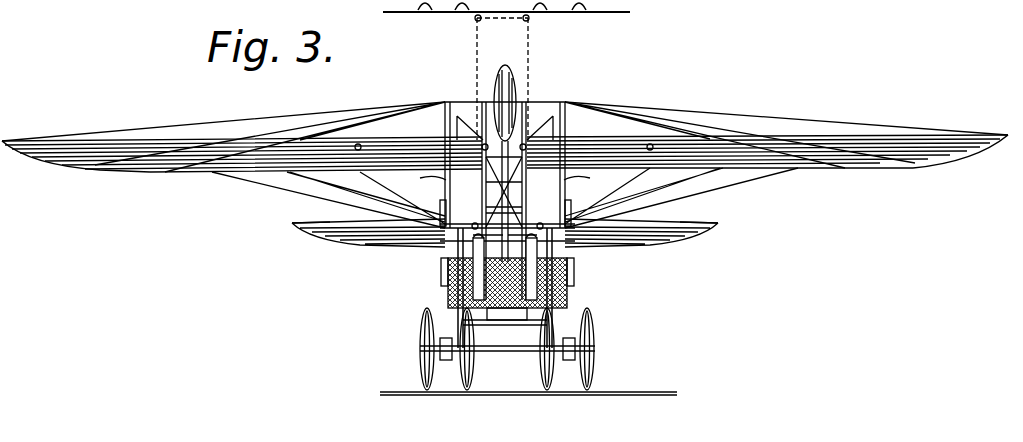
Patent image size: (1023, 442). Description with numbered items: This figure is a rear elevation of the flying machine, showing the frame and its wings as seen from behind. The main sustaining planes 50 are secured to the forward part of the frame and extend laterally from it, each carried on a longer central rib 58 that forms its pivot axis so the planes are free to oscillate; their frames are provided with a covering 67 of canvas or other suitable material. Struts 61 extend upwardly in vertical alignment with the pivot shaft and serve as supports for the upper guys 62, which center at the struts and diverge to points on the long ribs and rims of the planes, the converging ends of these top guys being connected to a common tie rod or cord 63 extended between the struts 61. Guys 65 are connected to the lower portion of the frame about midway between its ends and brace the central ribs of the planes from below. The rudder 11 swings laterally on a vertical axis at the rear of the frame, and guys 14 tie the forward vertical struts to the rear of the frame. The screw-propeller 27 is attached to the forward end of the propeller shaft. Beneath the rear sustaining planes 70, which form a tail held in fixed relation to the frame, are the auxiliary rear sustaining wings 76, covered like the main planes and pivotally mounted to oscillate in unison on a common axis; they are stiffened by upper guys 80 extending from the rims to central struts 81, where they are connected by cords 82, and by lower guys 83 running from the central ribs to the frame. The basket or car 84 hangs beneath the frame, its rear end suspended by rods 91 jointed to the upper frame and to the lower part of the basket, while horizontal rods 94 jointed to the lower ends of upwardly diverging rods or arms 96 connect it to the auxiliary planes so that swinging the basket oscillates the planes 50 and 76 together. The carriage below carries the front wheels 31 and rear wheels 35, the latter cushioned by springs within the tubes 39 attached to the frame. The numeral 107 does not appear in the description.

The rudder 11 is at (512, 125).
The guys 14 is at (492, 213).
The screw-propeller 27 is at (497, 88).
The front wheels 31 is at (420, 378).
The rear wheels 35 is at (478, 380).
The tubes 39 is at (447, 282).
The main sustaining planes 50 is at (505, 165).
The central rib 58 is at (455, 141).
The struts 61 is at (445, 102).
The upper guys 62 is at (342, 124).
The tie rod or cord 63 is at (509, 118).
The guys 65 is at (310, 193).
The covering 67 is at (170, 138).
The rear sustaining planes 70 is at (292, 146).
The auxiliary rear sustaining wings 76 is at (370, 238).
The upper guys 80 is at (340, 222).
The central struts 81 is at (441, 204).
The cords 82 is at (478, 200).
The lower guys 83 is at (440, 248).
The basket or car 84 is at (566, 300).
The rods 91 is at (491, 183).
The horizontal rods 94 is at (450, 292).
The upwardly diverging rods or arms 96 is at (441, 270).
The lower wing tips 107 is at (296, 231).